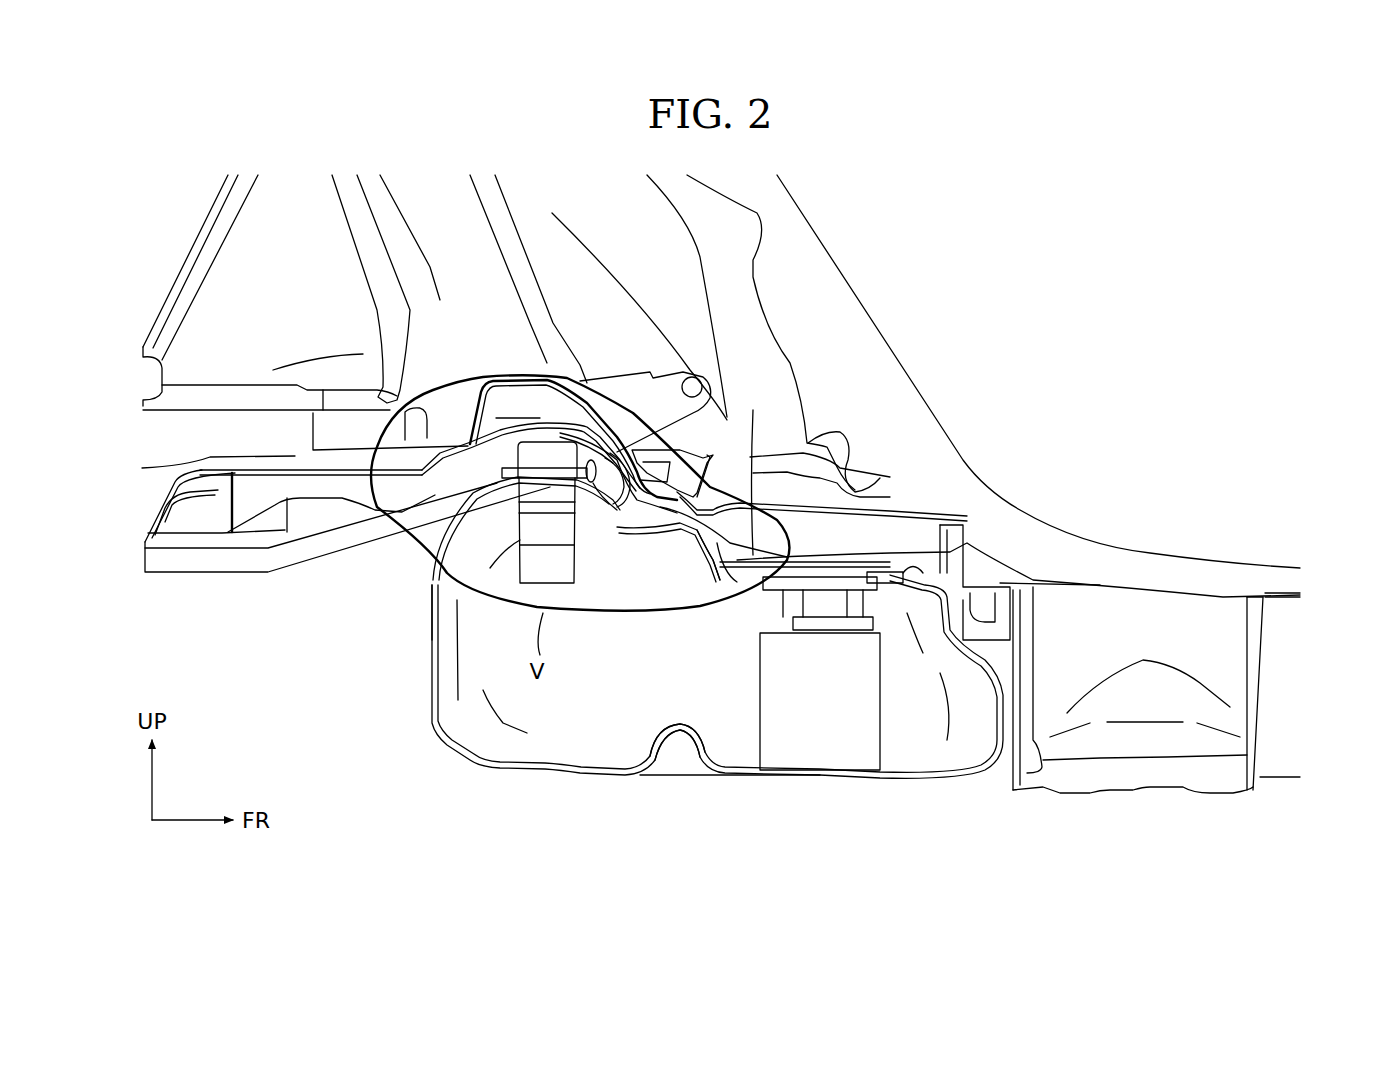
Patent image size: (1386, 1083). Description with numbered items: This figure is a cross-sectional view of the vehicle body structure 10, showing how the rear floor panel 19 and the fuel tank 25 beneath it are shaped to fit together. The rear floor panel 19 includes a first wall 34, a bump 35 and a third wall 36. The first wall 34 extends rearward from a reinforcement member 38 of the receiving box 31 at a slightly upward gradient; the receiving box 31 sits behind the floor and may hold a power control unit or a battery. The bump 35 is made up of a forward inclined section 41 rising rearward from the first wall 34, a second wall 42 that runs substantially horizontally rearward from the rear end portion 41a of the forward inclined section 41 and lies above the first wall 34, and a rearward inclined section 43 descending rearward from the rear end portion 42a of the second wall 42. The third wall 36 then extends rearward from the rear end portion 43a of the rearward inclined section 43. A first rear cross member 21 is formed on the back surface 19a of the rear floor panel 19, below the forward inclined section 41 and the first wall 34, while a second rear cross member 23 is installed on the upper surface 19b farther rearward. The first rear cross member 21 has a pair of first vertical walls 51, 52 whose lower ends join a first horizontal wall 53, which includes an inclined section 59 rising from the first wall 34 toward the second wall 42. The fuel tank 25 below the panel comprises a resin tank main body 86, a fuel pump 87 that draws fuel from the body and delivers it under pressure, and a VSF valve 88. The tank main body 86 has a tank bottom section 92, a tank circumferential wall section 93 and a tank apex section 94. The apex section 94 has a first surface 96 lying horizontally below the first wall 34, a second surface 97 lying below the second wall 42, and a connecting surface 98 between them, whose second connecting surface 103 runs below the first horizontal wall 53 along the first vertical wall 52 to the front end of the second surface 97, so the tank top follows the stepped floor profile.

The vehicle body 10 is at (821, 211).
The third wall 36 is at (362, 462).
The second rear cross member 23 is at (497, 378).
The bump 35 is at (564, 416).
The rearward inclined section 43 is at (477, 448).
The rear end portion 43a is at (393, 497).
The second wall 42 is at (545, 422).
The rear end portion 42a is at (517, 421).
The rear end portion 41a is at (593, 443).
The forward inclined section 41 is at (647, 473).
The surface 19b is at (752, 467).
The rear floor panel 19 is at (880, 505).
The first wall 34 is at (836, 475).
The first surface 96 is at (893, 565).
The tank apex section 94 is at (915, 560).
The reinforcement member 38 is at (973, 537).
The VSF valve 88 is at (527, 523).
The second surface 97 is at (597, 482).
The first vertical wall 52 is at (633, 500).
The first horizontal wall 53 is at (657, 520).
The tank circumferential wall section 93 is at (425, 627).
The first rear cross member 21 is at (643, 513).
The inclined section 59 is at (621, 547).
The back surface 19a is at (767, 512).
The fuel tank 25 is at (376, 656).
The connecting surface 98 is at (686, 533).
The second connecting surface 103 is at (675, 727).
The first vertical wall 51 is at (720, 580).
The tank main body 86 is at (430, 690).
The fuel pump 87 is at (867, 707).
The tank bottom section 92 is at (753, 780).
The receiving box 31 is at (1267, 643).